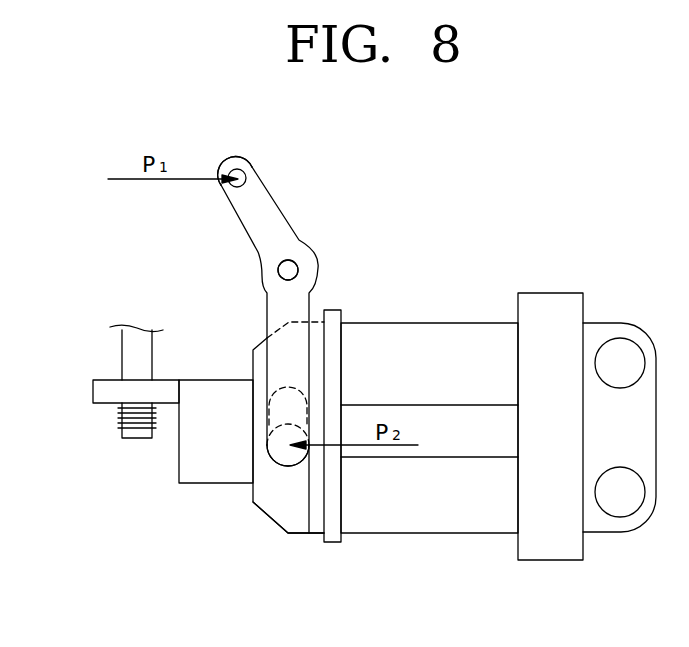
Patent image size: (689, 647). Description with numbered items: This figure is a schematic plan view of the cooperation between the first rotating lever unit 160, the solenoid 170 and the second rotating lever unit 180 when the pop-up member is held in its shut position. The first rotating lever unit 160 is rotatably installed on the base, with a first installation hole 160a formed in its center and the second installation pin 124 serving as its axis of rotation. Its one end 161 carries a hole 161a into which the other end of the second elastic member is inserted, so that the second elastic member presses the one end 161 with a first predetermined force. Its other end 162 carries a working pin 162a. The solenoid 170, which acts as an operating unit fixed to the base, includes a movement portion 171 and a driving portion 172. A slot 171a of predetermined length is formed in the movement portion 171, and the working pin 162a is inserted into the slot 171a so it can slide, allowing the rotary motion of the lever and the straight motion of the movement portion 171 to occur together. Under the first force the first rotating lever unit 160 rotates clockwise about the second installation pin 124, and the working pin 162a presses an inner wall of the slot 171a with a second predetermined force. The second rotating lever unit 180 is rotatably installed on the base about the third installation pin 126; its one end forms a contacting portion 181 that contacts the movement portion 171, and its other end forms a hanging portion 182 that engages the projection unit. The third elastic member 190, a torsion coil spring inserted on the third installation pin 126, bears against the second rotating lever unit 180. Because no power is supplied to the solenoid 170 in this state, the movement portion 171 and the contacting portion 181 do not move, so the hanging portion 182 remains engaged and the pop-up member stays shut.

The second installation pin 124 is at (279, 263).
The third installation pin 126 is at (122, 343).
The first rotating lever unit 160 is at (336, 261).
The first installation hole 160a is at (281, 274).
The one end of the first rotating lever unit 161 is at (253, 175).
The hole 161a is at (247, 187).
The other end of the first rotating lever unit 162 is at (288, 413).
The working pin 162a is at (280, 450).
The solenoid 170 is at (490, 448).
The movement portion 171 is at (277, 505).
The slot 171a is at (307, 535).
The driving portion 172 is at (463, 347).
The second rotating lever unit 180 is at (135, 412).
The contacting portion 181 is at (218, 428).
The hanging portion 182 is at (100, 390).
The third elastic member 190 is at (120, 413).